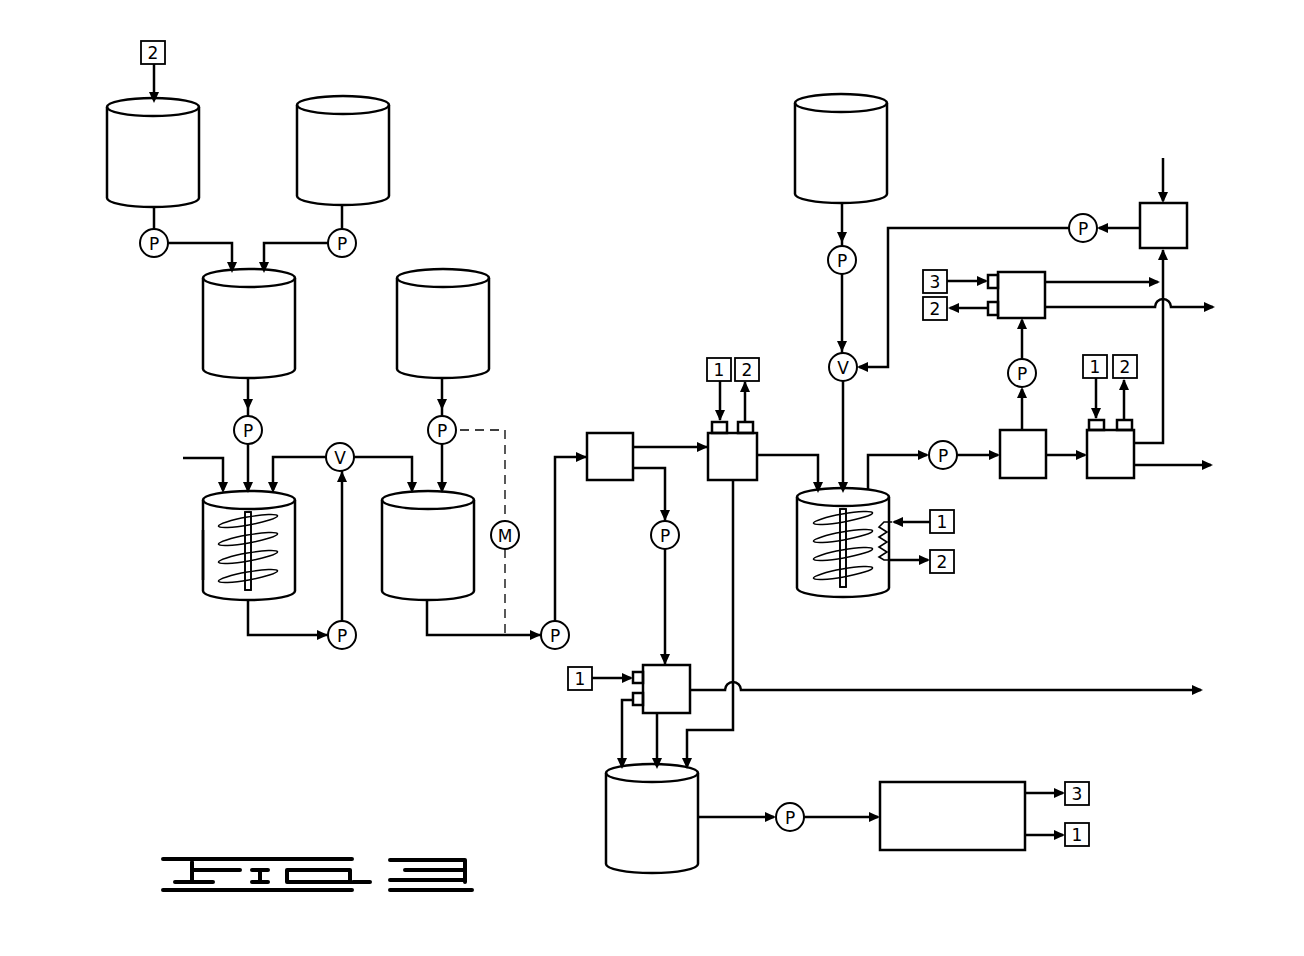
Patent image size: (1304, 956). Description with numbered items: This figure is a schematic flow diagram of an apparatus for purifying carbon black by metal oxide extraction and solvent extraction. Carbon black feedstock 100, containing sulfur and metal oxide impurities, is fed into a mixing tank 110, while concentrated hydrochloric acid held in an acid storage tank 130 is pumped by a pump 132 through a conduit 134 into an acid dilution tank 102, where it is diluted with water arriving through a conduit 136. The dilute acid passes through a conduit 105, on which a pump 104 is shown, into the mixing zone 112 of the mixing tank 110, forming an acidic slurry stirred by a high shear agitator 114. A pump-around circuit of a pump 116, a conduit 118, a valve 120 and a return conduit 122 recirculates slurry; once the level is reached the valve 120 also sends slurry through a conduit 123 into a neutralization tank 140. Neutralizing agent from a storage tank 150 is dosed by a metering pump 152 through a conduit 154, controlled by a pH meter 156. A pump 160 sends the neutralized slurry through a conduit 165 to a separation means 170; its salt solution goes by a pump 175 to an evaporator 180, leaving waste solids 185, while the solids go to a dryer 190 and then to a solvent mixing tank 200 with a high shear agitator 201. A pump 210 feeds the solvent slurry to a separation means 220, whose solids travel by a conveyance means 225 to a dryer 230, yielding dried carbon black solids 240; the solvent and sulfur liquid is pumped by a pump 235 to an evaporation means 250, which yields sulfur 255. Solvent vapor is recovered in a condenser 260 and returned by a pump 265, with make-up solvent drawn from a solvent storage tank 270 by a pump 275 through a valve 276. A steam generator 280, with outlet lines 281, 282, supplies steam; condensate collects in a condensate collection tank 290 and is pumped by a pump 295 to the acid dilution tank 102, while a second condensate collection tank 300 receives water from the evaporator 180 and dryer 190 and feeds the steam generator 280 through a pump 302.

The carbon black feedstock 100 is at (208, 455).
The acid dilution tank 102 is at (287, 320).
The pump 104 is at (262, 420).
The conduit 105 is at (240, 455).
The mixing tank 110 is at (227, 597).
The mixing zone 112 is at (210, 553).
The high shear agitator 114 is at (235, 525).
The pump 116 is at (335, 650).
The conduit 118 is at (338, 597).
The valve 120 is at (331, 443).
The return conduit 122 is at (275, 476).
The conduit 123 is at (368, 455).
The acid storage tank 130 is at (372, 100).
The pump 132 is at (356, 243).
The conduit 134 is at (300, 240).
The conduit 136 is at (197, 250).
The neutralization tank 140 is at (400, 610).
The storage tank 150 is at (485, 296).
The metering pump 152 is at (430, 420).
The conduit 154 is at (444, 463).
The pH meter 156 is at (507, 521).
The pump 160 is at (545, 650).
The conduit 165 is at (555, 565).
The separation means 170 is at (600, 433).
The pump 175 is at (652, 530).
The evaporator 180 is at (680, 665).
The waste solids 185 is at (1092, 688).
The dryer 190 is at (760, 437).
The solvent mixing tank 200 is at (870, 595).
The high shear agitator 201 is at (815, 553).
The pump 210 is at (932, 442).
The separation means 220 is at (1012, 430).
The conveyance means 225 is at (1065, 455).
The dryer 230 is at (1125, 478).
The pump 235 is at (1013, 362).
The dried carbon black solids 240 is at (1175, 462).
The evaporation means 250 is at (1028, 272).
The sulfur 255 is at (1188, 305).
The condenser 260 is at (1190, 220).
The pump 265 is at (1075, 215).
The solvent storage tank 270 is at (883, 90).
The pump 275 is at (830, 250).
The valve 276 is at (832, 355).
The steam generator 280 is at (958, 850).
The steam outlet line 281 is at (1043, 838).
The steam outlet line 282 is at (1043, 790).
The condensate collection tank 290 is at (185, 106).
The pump 295 is at (143, 238).
The second condensate collection tank 300 is at (613, 823).
The pump 302 is at (785, 803).